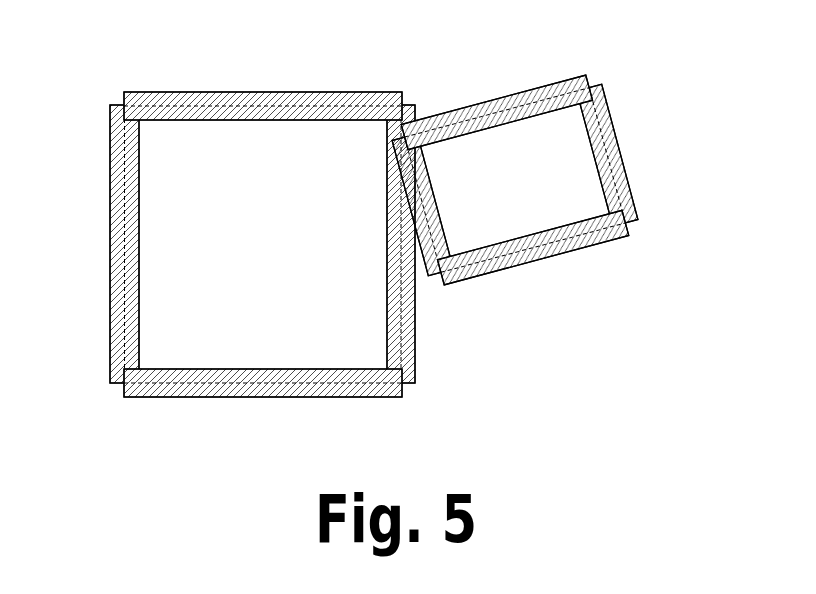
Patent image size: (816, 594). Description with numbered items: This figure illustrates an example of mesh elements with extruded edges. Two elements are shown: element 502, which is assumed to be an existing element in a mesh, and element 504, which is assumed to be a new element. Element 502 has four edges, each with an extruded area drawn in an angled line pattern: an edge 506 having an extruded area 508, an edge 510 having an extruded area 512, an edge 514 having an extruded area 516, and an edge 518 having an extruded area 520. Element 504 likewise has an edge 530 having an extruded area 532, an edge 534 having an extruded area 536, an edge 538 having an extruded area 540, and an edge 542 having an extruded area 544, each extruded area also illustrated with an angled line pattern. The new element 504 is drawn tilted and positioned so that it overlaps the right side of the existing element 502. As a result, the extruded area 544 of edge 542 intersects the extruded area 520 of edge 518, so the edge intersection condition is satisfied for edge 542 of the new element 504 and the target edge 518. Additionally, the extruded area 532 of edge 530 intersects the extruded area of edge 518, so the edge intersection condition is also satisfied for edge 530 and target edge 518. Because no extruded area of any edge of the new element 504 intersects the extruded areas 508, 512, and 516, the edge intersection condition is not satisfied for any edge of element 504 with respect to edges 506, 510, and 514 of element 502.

The element 502 is at (262, 243).
The element 504 is at (556, 190).
The edge 506 is at (198, 96).
The extruded area 508 is at (263, 92).
The edge 510 is at (125, 243).
The extruded area 512 is at (112, 328).
The edge 514 is at (188, 392).
The extruded area 516 is at (325, 400).
The edge 518 is at (417, 340).
The extruded area 520 is at (417, 365).
The edge 530 is at (490, 105).
The extruded area 532 is at (562, 80).
The edge 534 is at (637, 200).
The extruded area 536 is at (627, 162).
The edge 538 is at (557, 240).
The extruded area 540 is at (607, 245).
The edge 542 is at (427, 223).
The extruded area 544 is at (430, 270).